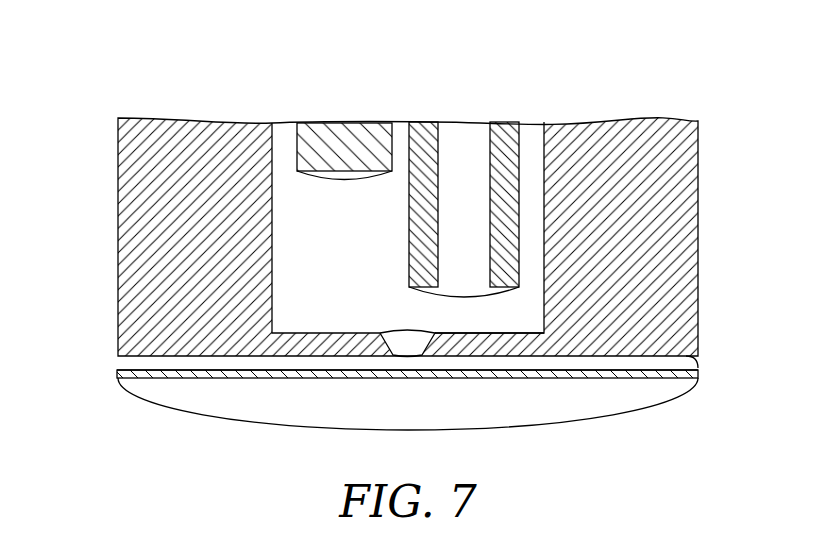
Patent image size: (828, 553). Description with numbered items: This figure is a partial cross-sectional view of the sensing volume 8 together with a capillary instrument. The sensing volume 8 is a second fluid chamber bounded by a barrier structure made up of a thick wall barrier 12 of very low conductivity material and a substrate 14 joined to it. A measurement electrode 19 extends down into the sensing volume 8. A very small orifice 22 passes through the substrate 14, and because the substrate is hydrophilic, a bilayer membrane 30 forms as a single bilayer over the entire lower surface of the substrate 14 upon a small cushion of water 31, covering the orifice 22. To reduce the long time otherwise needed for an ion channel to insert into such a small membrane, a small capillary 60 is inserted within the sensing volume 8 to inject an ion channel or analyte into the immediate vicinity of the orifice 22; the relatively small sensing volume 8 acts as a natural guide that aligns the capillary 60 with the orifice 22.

The sensing volume 8 is at (288, 130).
The thick wall barrier 12 is at (133, 237).
The substrate 14 is at (473, 333).
The measurement electrode 19 is at (338, 128).
The orifice 22 is at (400, 340).
The membrane 30 is at (163, 404).
The cushion of water 31 is at (118, 361).
The capillary 60 is at (507, 128).